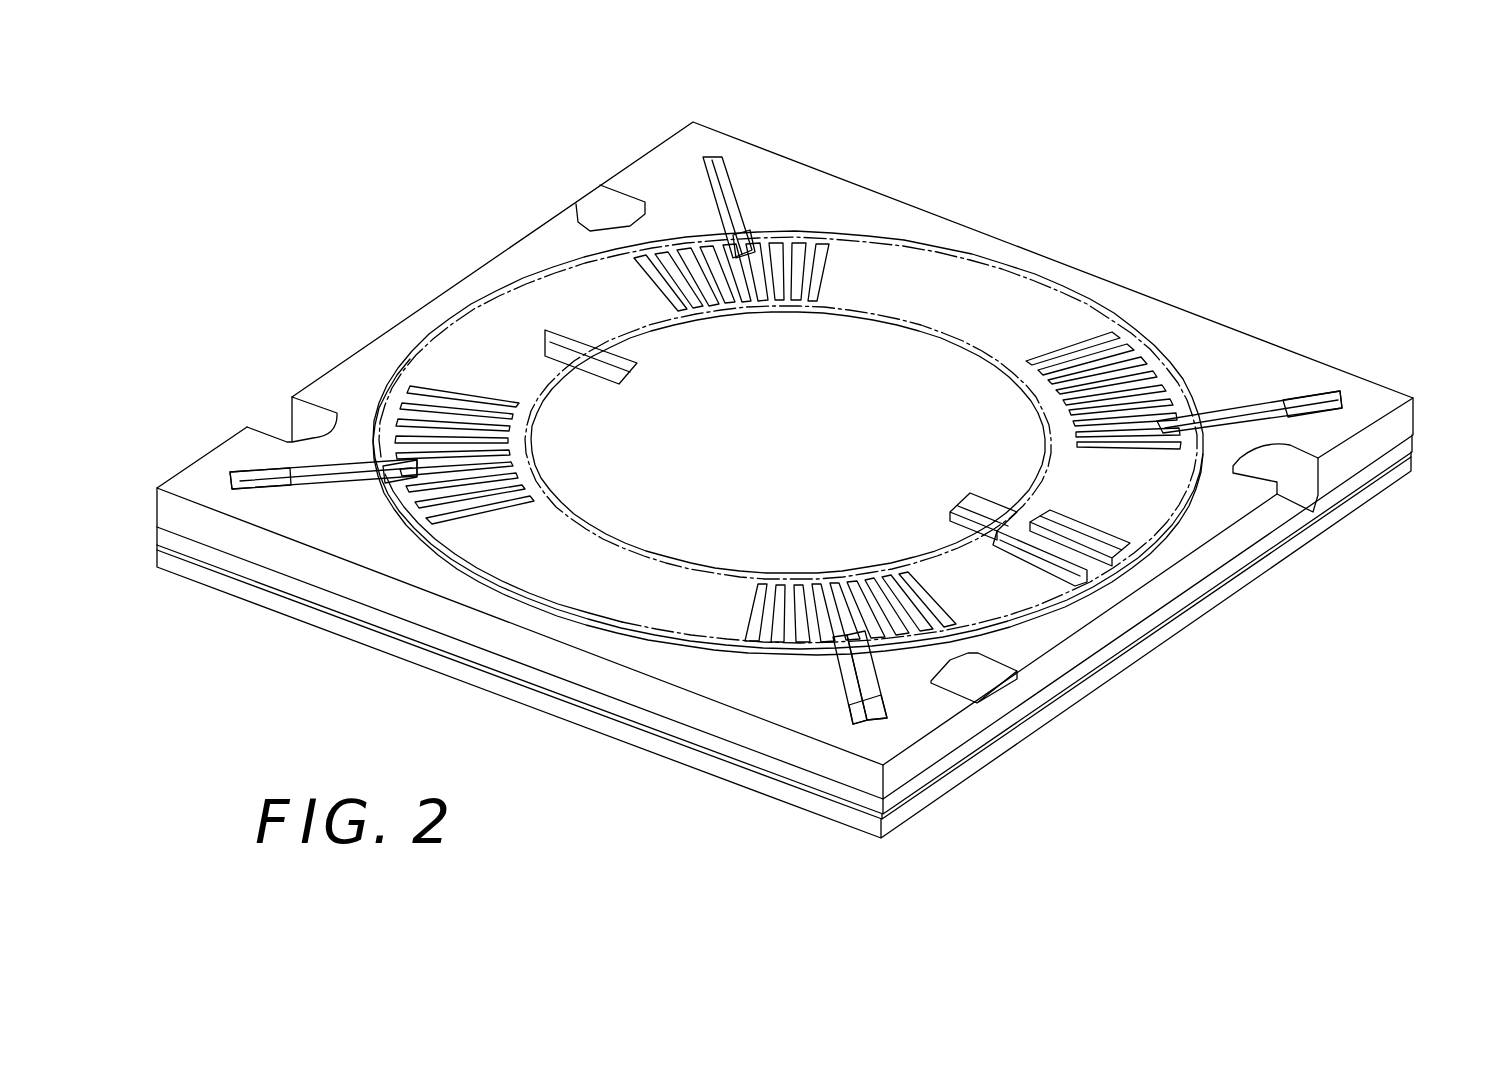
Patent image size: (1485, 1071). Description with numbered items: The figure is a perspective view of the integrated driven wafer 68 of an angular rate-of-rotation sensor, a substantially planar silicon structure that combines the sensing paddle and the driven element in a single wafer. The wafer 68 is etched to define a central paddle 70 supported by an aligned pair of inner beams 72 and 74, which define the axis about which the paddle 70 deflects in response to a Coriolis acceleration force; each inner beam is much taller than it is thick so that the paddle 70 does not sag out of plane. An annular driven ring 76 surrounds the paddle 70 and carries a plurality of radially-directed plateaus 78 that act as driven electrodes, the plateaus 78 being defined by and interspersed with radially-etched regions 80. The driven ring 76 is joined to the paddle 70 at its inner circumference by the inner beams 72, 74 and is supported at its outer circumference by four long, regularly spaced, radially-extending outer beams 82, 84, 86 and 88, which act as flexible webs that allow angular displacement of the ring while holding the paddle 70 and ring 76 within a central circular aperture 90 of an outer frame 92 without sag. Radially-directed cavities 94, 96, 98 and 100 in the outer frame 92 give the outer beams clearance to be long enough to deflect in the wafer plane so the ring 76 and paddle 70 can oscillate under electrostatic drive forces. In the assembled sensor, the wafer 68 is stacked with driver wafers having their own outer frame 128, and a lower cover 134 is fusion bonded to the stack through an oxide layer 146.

The integrated driven wafer 68 is at (1416, 402).
The central paddle 70 is at (795, 456).
The inner beam 72 is at (598, 376).
The inner beam 74 is at (1000, 507).
The annular driven ring 76 is at (893, 275).
The radially-directed plateaus 78 is at (665, 253).
The radially-etched regions 80 is at (662, 250).
The outer beam 82 is at (718, 200).
The outer beam 84 is at (1228, 423).
The outer beam 86 is at (848, 667).
The outer beam 88 is at (320, 477).
The central circular aperture 90 is at (383, 425).
The outer frame 92 is at (398, 343).
The radially-directed cavity 94 is at (745, 228).
The radially-directed cavity 96 is at (1284, 405).
The radially-directed cavity 98 is at (866, 710).
The radially-directed cavity 100 is at (243, 474).
The outer frame 128 is at (1010, 721).
The lower cover 134 is at (967, 767).
The oxide layer 146 is at (970, 769).